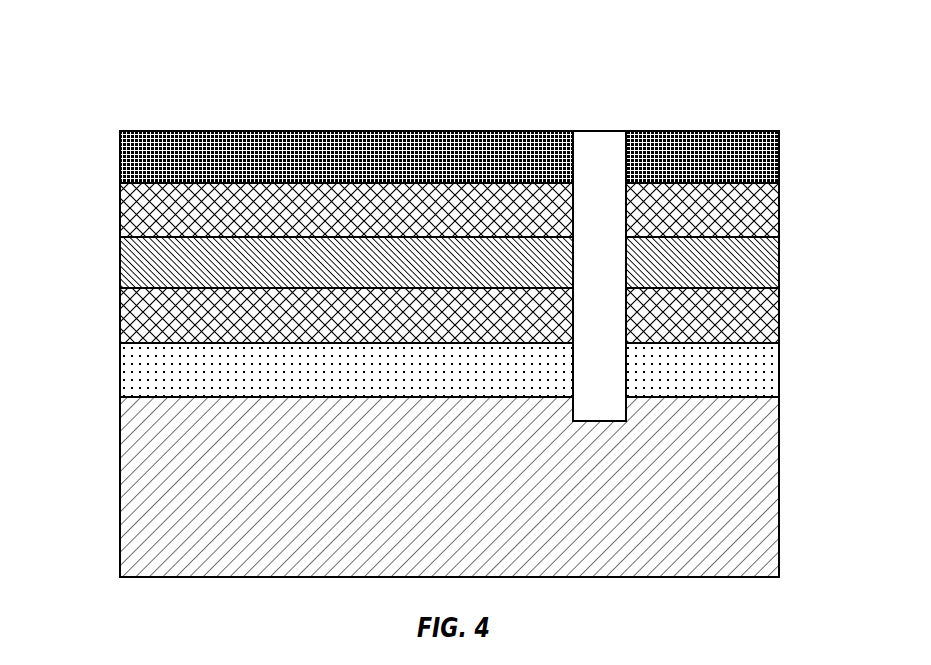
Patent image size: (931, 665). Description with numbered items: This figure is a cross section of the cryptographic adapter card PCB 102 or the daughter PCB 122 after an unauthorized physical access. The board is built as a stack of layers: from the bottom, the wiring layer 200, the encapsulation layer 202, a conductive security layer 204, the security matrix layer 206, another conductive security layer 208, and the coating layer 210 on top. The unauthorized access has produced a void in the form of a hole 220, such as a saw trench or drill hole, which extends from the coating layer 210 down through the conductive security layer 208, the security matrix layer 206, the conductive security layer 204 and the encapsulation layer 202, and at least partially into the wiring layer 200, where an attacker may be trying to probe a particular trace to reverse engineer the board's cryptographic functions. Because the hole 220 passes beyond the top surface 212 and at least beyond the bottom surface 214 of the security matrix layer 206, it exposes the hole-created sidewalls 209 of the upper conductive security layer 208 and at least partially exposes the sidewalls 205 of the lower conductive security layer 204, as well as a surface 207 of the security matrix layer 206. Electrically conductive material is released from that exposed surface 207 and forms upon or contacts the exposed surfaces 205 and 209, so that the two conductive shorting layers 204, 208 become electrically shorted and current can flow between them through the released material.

The cryptographic adapter card PCB 102 is at (197, 86).
The daughter PCB 122 is at (277, 86).
The wiring layer 200 is at (147, 500).
The encapsulation layer 202 is at (132, 375).
The conductive security layer 204 is at (132, 322).
The hole-created sidewalls of conductive security layer 205 is at (620, 314).
The security matrix layer 206 is at (132, 265).
The surface of security matrix layer 207 is at (620, 256).
The conductive security layer 208 is at (132, 213).
The hole-created sidewalls of conductive security layer 209 is at (620, 202).
The coating layer 210 is at (132, 158).
The top surface 212 is at (753, 236).
The bottom surface 214 is at (753, 290).
The hole 220 is at (596, 57).